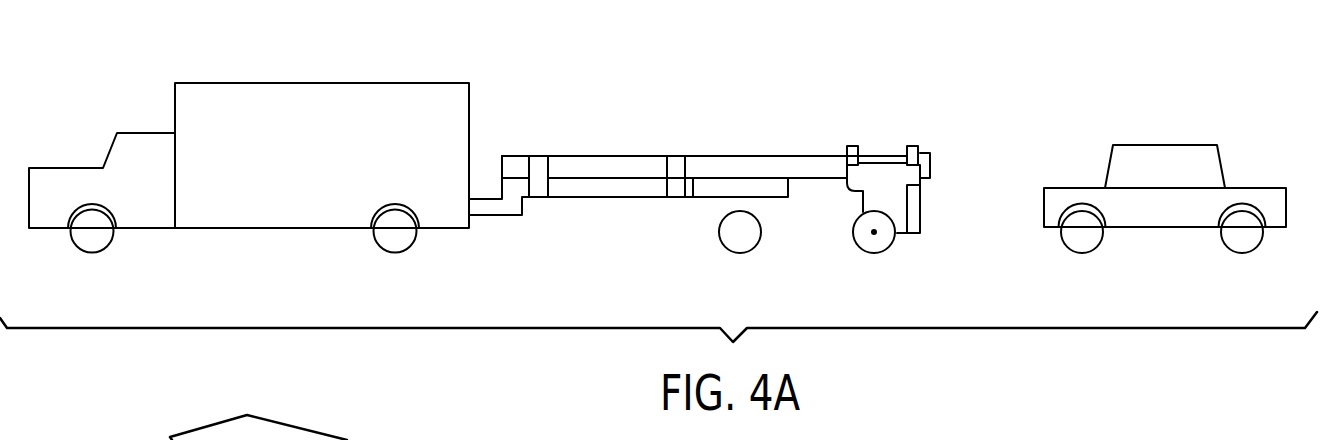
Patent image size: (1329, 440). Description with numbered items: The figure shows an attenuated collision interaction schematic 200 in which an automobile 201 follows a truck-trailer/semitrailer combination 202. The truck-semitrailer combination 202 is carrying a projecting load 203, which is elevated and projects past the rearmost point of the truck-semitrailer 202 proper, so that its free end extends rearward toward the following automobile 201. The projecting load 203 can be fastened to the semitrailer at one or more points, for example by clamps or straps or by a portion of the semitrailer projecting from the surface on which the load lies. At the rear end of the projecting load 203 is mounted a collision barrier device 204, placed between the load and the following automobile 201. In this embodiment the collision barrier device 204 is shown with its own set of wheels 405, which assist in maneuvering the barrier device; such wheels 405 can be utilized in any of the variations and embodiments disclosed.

The attenuated collision interaction schematic 200 is at (270, 58).
The automobile 201 is at (1169, 140).
The truck-trailer/semitrailer combination 202 is at (504, 108).
The projecting load 203 is at (797, 151).
The collision barrier device 204 is at (928, 210).
The wheels 405 is at (856, 252).